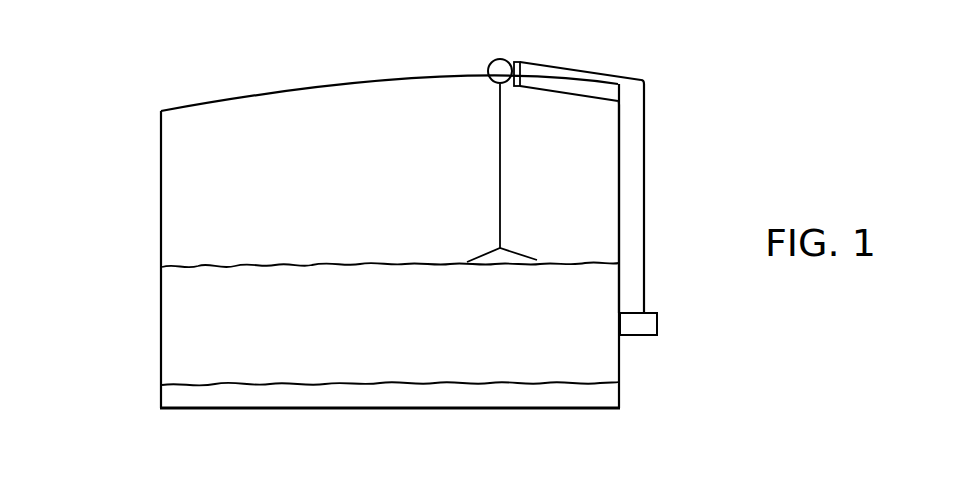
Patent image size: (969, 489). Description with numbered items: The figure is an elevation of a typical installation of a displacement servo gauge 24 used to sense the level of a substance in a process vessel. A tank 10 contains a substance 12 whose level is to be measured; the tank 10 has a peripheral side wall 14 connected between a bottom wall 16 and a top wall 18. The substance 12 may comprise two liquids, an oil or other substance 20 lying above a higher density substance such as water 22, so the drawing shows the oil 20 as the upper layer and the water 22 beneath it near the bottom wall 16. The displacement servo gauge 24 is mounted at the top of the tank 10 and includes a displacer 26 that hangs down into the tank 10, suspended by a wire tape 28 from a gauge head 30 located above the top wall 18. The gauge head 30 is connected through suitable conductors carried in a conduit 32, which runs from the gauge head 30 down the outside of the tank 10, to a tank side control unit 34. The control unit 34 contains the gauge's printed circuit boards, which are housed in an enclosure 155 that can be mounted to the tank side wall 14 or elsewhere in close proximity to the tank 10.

The tank 10 is at (329, 235).
The substance 12 is at (304, 264).
The peripheral side wall 14 is at (160, 181).
The bottom wall 16 is at (286, 410).
The top wall 18 is at (316, 83).
The oil 20 is at (423, 344).
The water 22 is at (440, 393).
The displacement servo gauge 24 is at (527, 52).
The displacer 26 is at (507, 253).
The wire tape 28 is at (502, 172).
The gauge head 30 is at (503, 58).
The conduit 32 is at (620, 72).
The tank side control unit 34 is at (663, 311).
The enclosure 155 is at (657, 325).